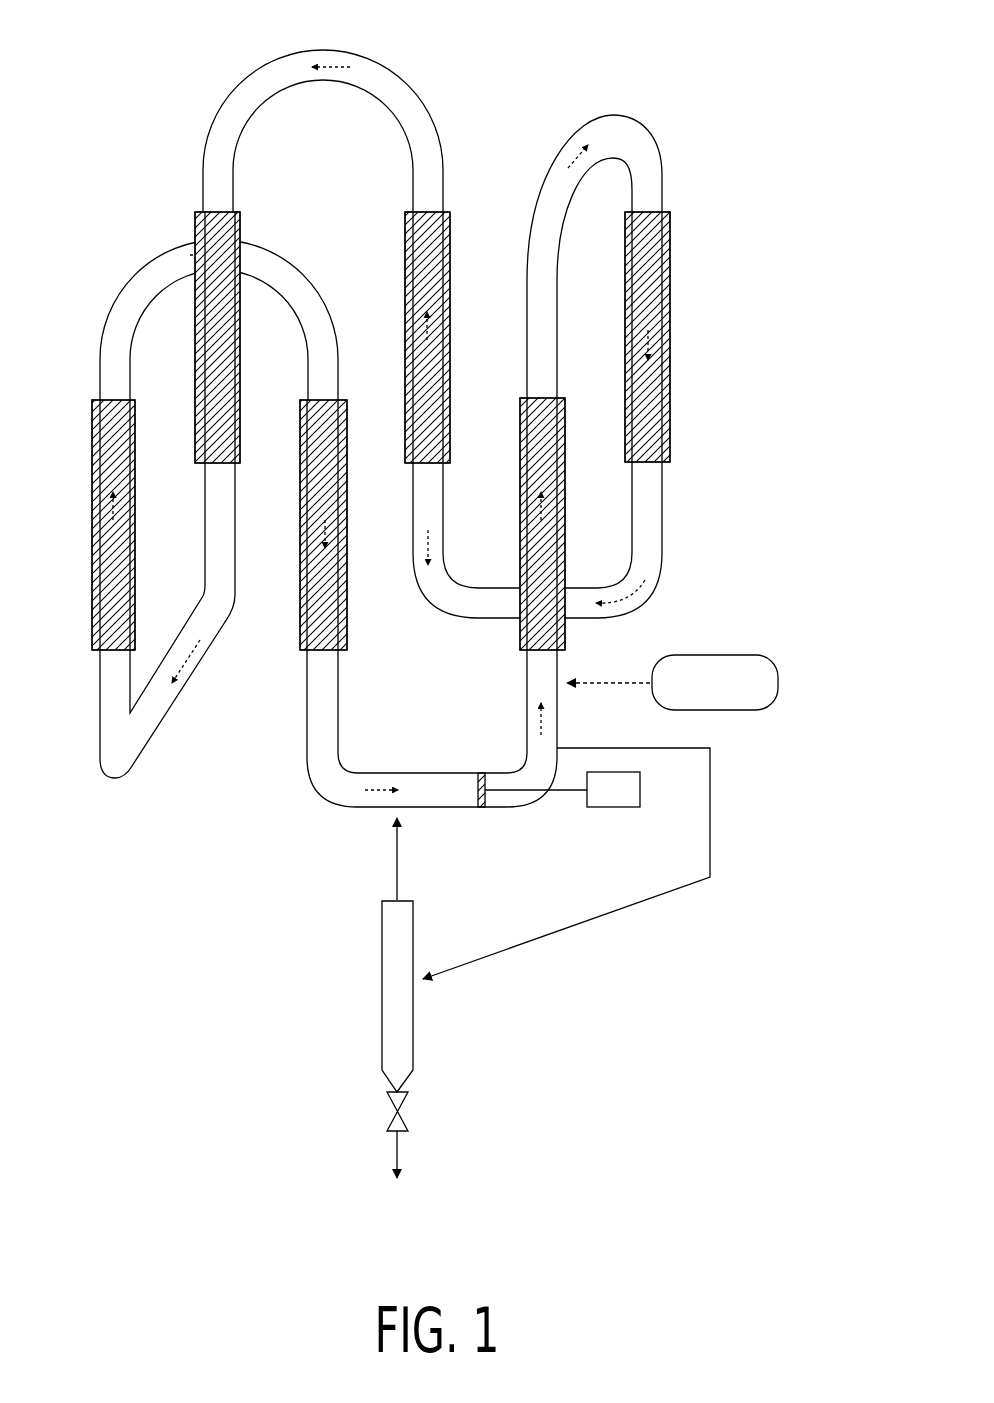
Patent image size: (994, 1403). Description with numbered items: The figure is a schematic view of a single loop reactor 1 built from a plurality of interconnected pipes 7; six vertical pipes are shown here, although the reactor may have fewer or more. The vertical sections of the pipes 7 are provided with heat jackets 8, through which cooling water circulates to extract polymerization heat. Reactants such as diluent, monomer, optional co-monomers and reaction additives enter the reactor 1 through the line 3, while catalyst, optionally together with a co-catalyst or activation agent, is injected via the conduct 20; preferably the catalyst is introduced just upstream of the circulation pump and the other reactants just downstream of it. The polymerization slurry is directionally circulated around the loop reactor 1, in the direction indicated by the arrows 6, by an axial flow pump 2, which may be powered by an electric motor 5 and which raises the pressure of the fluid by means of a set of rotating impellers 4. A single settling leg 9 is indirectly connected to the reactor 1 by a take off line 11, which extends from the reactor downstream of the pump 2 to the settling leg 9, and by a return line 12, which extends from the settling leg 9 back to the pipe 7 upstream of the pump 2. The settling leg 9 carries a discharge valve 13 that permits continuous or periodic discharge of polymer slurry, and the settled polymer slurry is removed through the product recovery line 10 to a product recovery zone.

The loop reactor 1 is at (722, 140).
The axial flow pump 2 is at (521, 818).
The line 3 is at (615, 698).
The rotating impellers 4 is at (476, 810).
The electric motor 5 is at (643, 788).
The arrows 6 is at (575, 175).
The pipes 7 is at (665, 520).
The heat jackets 8 is at (676, 365).
The settling leg 9 is at (375, 970).
The product recovery line 10 is at (396, 1175).
The take off line 11 is at (712, 820).
The return line 12 is at (395, 880).
The discharge valve 13 is at (385, 1122).
The conduct 20 is at (430, 768).